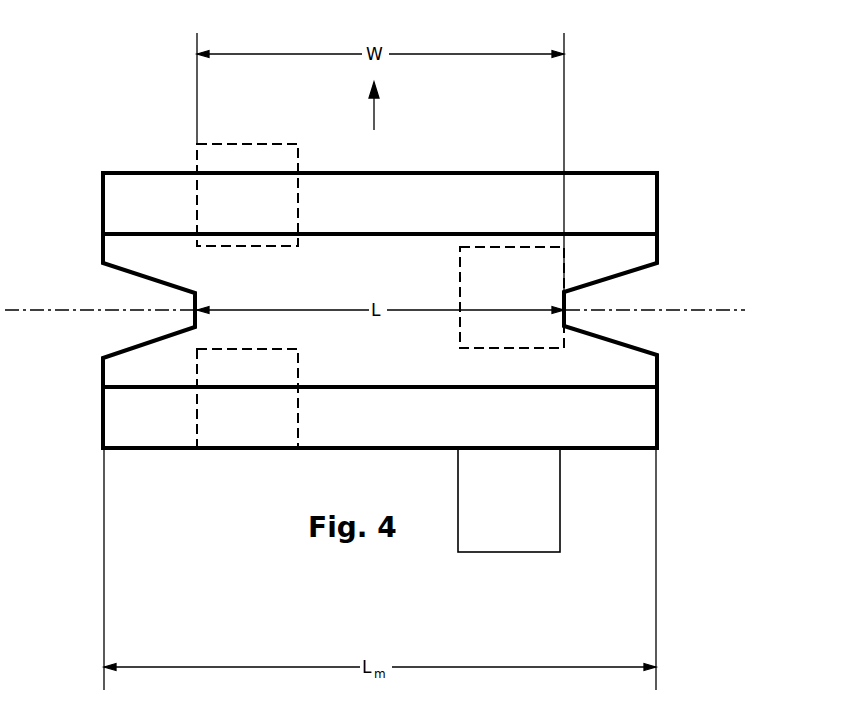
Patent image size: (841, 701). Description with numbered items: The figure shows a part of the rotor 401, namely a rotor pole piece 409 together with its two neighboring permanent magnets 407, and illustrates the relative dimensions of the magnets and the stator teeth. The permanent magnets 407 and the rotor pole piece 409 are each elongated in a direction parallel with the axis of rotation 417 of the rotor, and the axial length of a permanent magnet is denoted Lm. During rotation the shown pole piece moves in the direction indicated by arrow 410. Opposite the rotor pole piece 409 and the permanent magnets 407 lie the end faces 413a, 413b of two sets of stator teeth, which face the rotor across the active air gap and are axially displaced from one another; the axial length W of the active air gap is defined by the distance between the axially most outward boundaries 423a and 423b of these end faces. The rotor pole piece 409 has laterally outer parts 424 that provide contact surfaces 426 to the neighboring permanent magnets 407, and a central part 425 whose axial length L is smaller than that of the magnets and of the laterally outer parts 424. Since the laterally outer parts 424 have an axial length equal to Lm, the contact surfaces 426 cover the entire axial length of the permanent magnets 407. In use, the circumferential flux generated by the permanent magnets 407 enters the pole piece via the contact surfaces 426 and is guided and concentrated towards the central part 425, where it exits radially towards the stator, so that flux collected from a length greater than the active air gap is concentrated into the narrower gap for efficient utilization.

The rotor 401 is at (690, 230).
The permanent magnet 407 is at (146, 184).
The rotor pole piece 409 is at (430, 258).
The arrow 410 is at (378, 104).
The end faces of stator teeth 413a is at (253, 151).
The end faces of stator teeth 413b is at (477, 333).
The axis of rotation 417 is at (683, 309).
The axially most outward boundary 423a is at (197, 414).
The axially most outward boundary 423b is at (561, 490).
The laterally outer part 424 is at (120, 247).
The central part 425 is at (193, 312).
The contact surface 426 is at (579, 232).